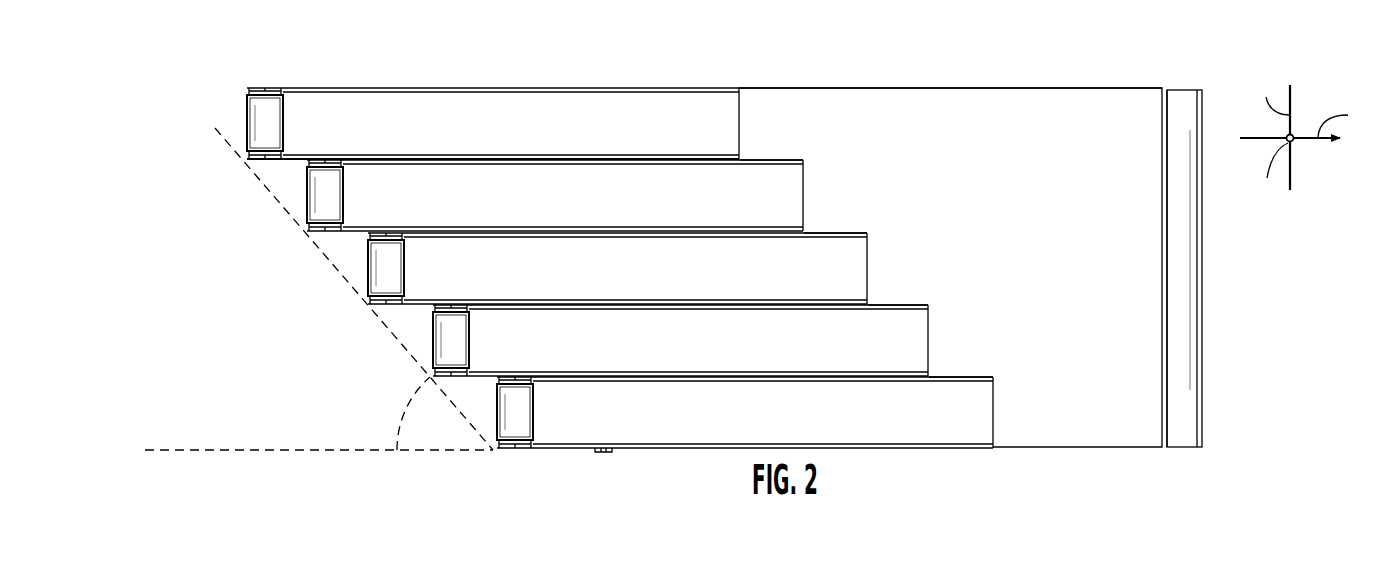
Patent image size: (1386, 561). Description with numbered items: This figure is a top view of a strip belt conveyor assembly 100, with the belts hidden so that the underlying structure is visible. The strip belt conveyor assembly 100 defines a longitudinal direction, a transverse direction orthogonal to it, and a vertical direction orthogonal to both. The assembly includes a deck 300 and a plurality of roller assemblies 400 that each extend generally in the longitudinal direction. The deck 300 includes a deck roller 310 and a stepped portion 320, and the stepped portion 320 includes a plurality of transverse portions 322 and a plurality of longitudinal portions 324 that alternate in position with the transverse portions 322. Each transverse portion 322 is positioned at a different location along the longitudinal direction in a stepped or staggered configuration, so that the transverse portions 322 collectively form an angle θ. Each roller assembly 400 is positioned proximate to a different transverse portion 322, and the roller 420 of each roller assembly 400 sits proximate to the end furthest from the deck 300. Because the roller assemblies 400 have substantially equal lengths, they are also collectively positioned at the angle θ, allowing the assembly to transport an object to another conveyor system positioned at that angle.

The strip belt conveyor assembly 100 is at (858, 35).
The deck 300 is at (1048, 90).
The deck roller 310 is at (1181, 92).
The stepped portion 320 is at (919, 365).
The transverse portions 322 is at (739, 123).
The longitudinal portions 324 is at (766, 163).
The roller assemblies 400 is at (583, 390).
The roller 420 is at (247, 115).